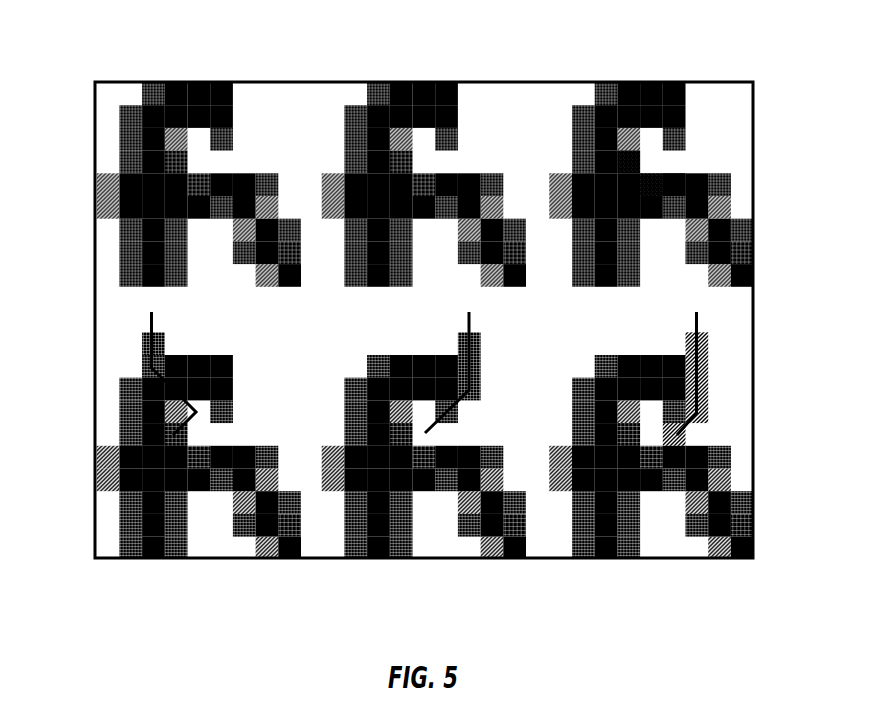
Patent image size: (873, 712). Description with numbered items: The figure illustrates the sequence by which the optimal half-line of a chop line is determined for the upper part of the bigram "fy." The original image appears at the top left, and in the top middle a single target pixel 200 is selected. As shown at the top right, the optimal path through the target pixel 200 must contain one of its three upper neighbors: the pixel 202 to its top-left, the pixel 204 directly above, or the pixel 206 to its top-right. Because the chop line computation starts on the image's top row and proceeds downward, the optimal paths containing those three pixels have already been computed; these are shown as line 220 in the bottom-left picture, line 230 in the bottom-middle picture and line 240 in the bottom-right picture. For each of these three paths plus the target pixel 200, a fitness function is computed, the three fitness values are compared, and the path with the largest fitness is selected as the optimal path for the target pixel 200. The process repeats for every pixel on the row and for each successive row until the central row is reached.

The target pixel 200 is at (428, 188).
The top-left neighboring pixel 202 is at (627, 162).
The top neighboring pixel 204 is at (650, 162).
The top-right neighboring pixel 206 is at (672, 163).
The line 220 is at (147, 322).
The line 230 is at (470, 323).
The line 240 is at (697, 323).